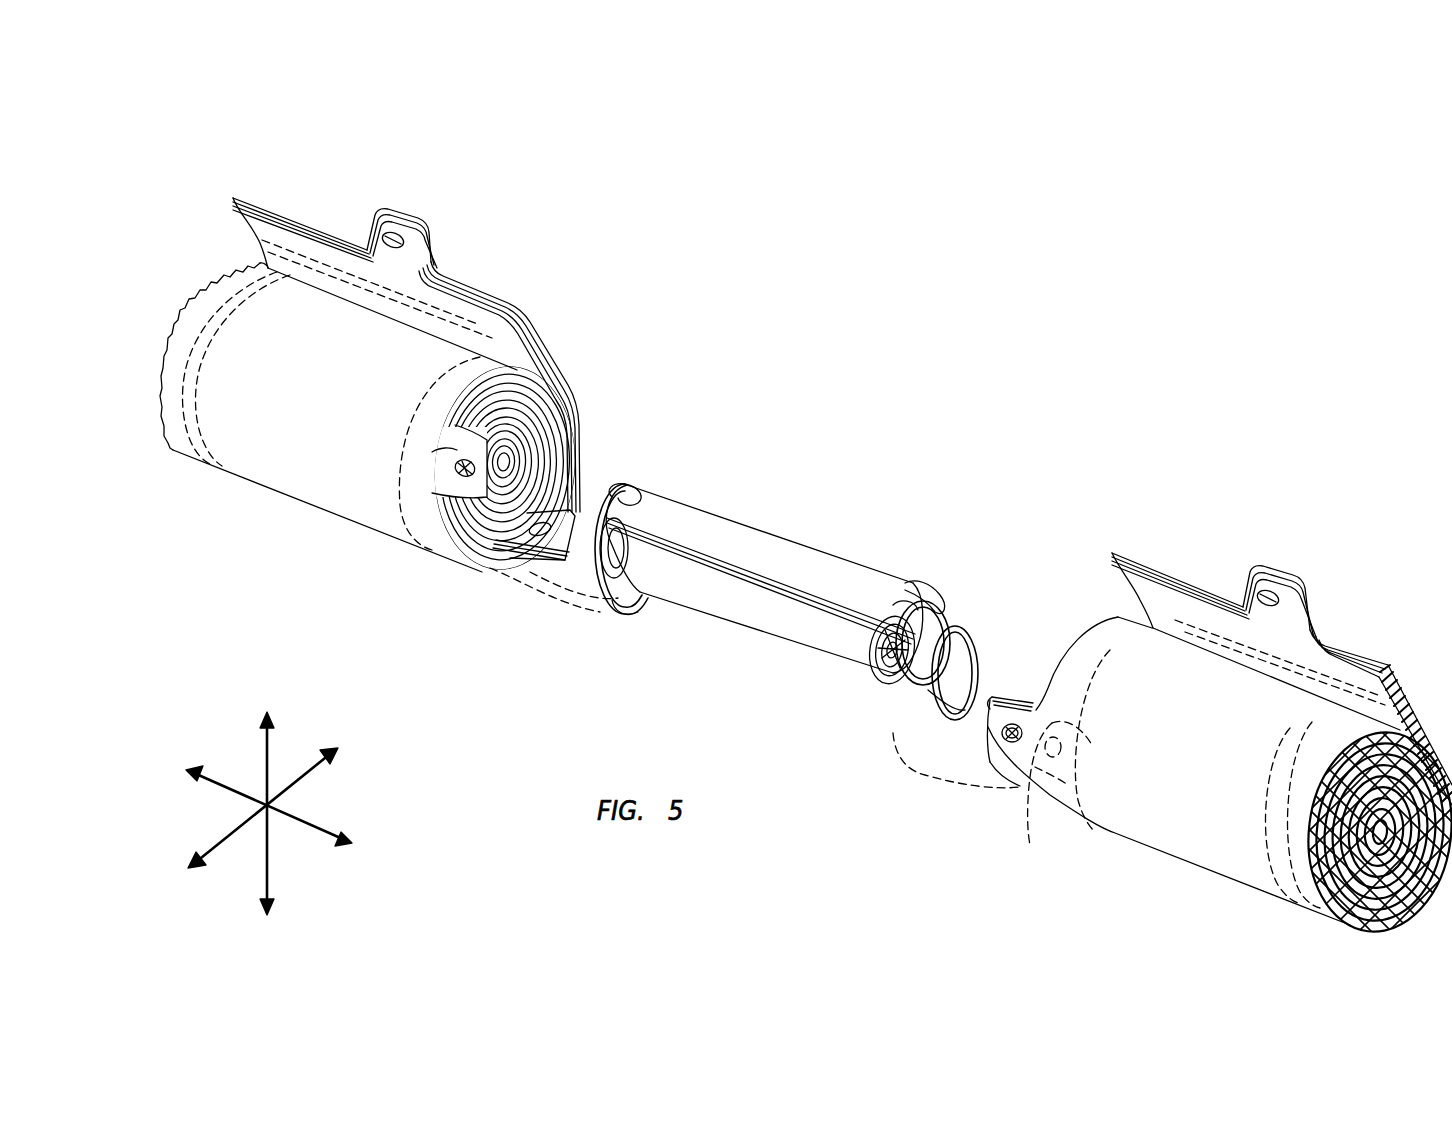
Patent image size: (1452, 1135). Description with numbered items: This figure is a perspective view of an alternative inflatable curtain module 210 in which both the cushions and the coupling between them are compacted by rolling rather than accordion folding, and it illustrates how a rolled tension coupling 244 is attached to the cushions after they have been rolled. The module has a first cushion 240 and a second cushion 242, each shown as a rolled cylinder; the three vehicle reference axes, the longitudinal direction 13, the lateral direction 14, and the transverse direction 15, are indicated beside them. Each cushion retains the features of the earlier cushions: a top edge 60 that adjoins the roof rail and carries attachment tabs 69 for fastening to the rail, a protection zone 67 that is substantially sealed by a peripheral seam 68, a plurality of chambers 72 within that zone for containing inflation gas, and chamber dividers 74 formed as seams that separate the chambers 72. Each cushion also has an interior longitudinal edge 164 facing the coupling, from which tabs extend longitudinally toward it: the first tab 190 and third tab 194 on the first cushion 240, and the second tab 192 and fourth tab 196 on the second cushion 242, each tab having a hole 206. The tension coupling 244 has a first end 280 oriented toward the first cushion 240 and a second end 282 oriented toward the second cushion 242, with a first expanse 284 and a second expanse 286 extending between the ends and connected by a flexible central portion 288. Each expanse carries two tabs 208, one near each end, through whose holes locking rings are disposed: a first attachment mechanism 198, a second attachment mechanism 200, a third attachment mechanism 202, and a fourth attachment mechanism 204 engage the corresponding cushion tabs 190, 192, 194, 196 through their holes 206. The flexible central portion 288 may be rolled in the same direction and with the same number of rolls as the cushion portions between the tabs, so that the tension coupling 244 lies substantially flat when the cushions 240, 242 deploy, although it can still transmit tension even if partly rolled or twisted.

The longitudinal direction 13 is at (315, 833).
The lateral direction 14 is at (220, 848).
The transverse direction 15 is at (265, 745).
The top edge 60 is at (288, 232).
The protection zone 67 is at (335, 367).
The peripheral seam 68 is at (486, 332).
The attachment tab 69 is at (378, 214).
The chamber 72 is at (312, 447).
The chamber divider 74 is at (197, 338).
The interior longitudinal edge 164 is at (427, 545).
The first tab 190 is at (453, 452).
The second tab 192 is at (1007, 760).
The third tab 194 is at (527, 555).
The fourth tab 196 is at (1025, 855).
The first attachment mechanism 198 is at (604, 500).
The second attachment mechanism 200 is at (970, 648).
The third attachment mechanism 202 is at (612, 618).
The fourth attachment mechanism 204 is at (945, 715).
The hole 206 is at (450, 472).
The tab 208 is at (638, 485).
The inflatable curtain module 210 is at (1213, 298).
The first cushion 240 is at (502, 228).
The second cushion 242 is at (1335, 497).
The tension coupling 244 is at (878, 422).
The first end 280 is at (715, 478).
The second end 282 is at (932, 570).
The first expanse 284 is at (768, 568).
The second expanse 286 is at (900, 672).
The flexible central portion 288 is at (833, 655).